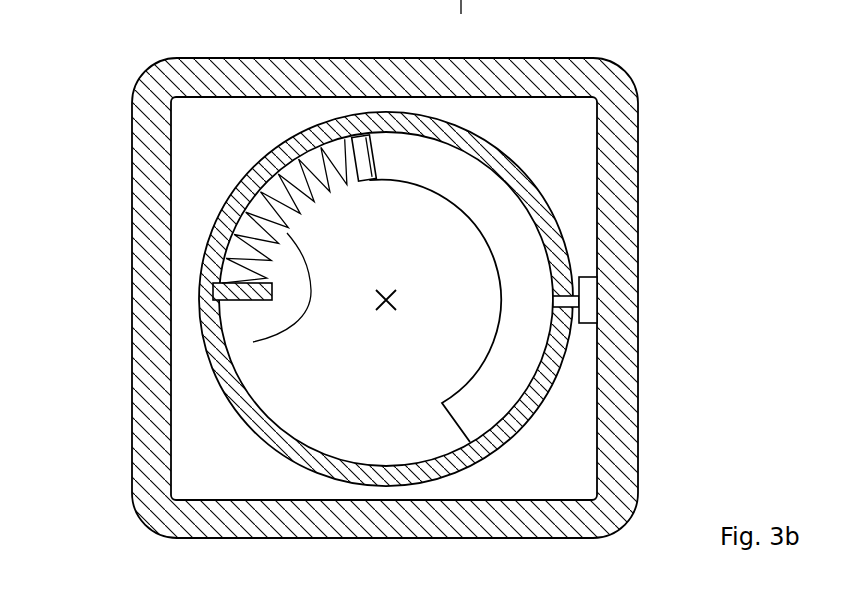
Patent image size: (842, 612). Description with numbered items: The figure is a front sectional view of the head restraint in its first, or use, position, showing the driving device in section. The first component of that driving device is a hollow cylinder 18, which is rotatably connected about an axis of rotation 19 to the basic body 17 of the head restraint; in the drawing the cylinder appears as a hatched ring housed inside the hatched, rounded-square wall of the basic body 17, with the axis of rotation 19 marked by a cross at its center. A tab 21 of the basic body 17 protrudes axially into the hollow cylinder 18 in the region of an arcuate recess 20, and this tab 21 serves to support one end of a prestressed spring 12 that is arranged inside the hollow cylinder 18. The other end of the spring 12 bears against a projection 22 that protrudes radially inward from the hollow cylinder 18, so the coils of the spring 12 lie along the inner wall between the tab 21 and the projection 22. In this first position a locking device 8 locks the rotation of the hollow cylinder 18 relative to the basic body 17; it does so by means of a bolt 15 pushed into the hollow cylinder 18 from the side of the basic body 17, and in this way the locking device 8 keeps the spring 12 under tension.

The locking device 8 is at (589, 288).
The spring 12 is at (253, 342).
The bolt 15 is at (567, 294).
The basic body 17 is at (625, 354).
The hollow cylinder 18 is at (549, 238).
The axis of rotation 19 is at (387, 305).
The arcuate recess 20 is at (504, 211).
The tab 21 is at (380, 157).
The projection 22 is at (246, 304).